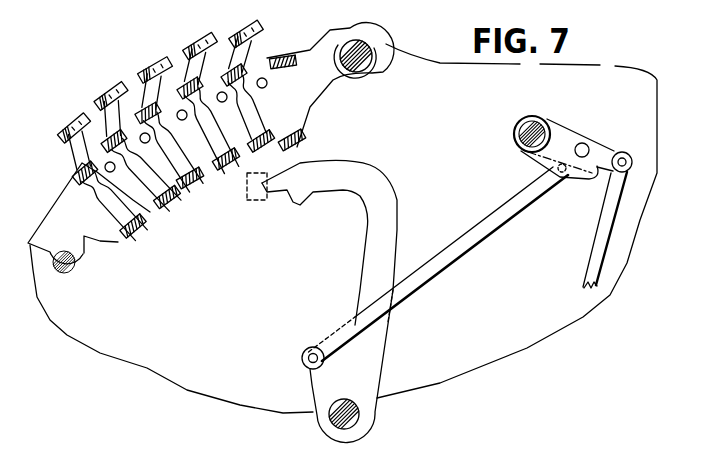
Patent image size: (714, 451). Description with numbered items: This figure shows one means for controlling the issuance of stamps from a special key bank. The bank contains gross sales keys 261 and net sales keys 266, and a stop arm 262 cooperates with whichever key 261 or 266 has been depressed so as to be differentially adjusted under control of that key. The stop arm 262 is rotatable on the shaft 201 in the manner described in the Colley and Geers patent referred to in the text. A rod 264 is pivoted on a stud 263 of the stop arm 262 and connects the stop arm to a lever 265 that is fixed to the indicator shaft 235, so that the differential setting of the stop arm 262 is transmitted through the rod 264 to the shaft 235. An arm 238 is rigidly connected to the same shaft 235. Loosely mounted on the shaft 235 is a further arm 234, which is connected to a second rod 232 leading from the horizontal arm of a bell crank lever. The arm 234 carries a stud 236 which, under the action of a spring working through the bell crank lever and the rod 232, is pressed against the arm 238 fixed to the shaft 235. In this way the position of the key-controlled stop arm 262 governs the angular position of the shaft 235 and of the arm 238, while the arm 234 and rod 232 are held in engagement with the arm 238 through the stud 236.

The shaft 201 is at (359, 416).
The second rod 232 is at (595, 243).
The arm 234 is at (600, 148).
The shaft 235 is at (520, 128).
The stud 236 is at (583, 143).
The arm 238 is at (582, 180).
The gross sales keys 261 is at (108, 88).
The stop arm 262 is at (362, 170).
The stud 263 is at (307, 352).
The rod 264 is at (430, 277).
The lever 265 is at (543, 167).
The net sales keys 266 is at (238, 22).